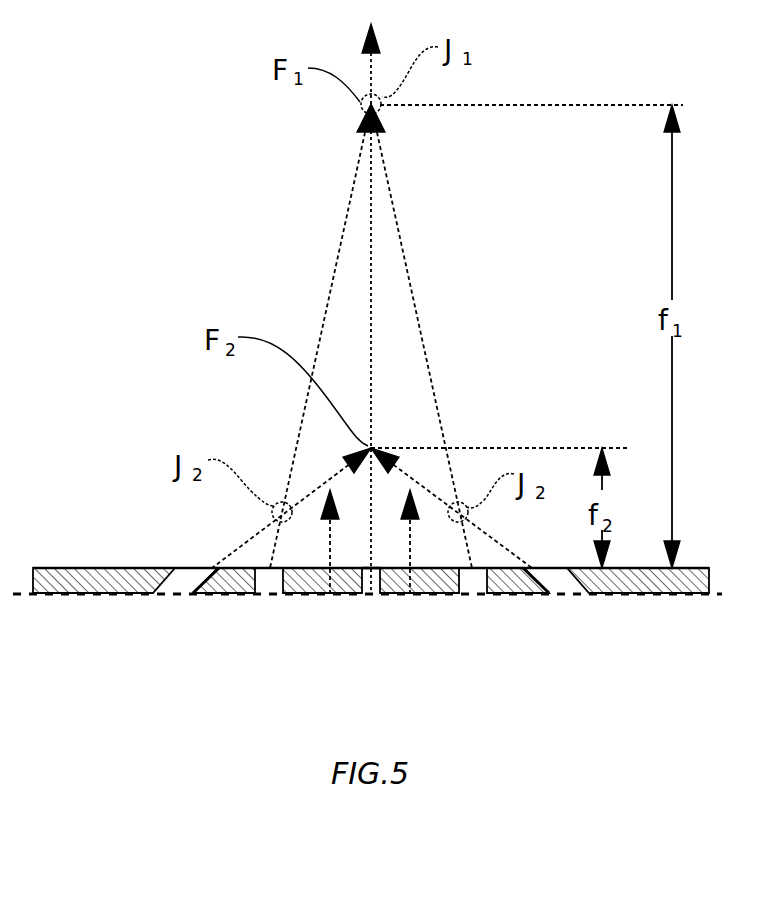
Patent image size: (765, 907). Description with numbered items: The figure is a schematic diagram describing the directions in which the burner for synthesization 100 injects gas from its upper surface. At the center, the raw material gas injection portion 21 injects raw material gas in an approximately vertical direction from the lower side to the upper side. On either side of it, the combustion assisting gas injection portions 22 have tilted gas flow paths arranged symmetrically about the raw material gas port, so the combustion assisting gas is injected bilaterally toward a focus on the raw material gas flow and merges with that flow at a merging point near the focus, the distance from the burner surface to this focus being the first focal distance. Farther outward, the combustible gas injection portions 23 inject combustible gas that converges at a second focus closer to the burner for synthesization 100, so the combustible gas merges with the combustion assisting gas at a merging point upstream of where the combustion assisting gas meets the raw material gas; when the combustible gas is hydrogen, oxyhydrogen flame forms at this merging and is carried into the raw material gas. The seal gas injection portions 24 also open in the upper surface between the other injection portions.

The burner for synthesization 100 is at (68, 500).
The raw material gas injection portion 21 is at (373, 598).
The combustion assisting gas injection portion 22 is at (272, 598).
The combustible gas injection portion 23 is at (175, 598).
The seal gas injection portion 24 is at (327, 598).